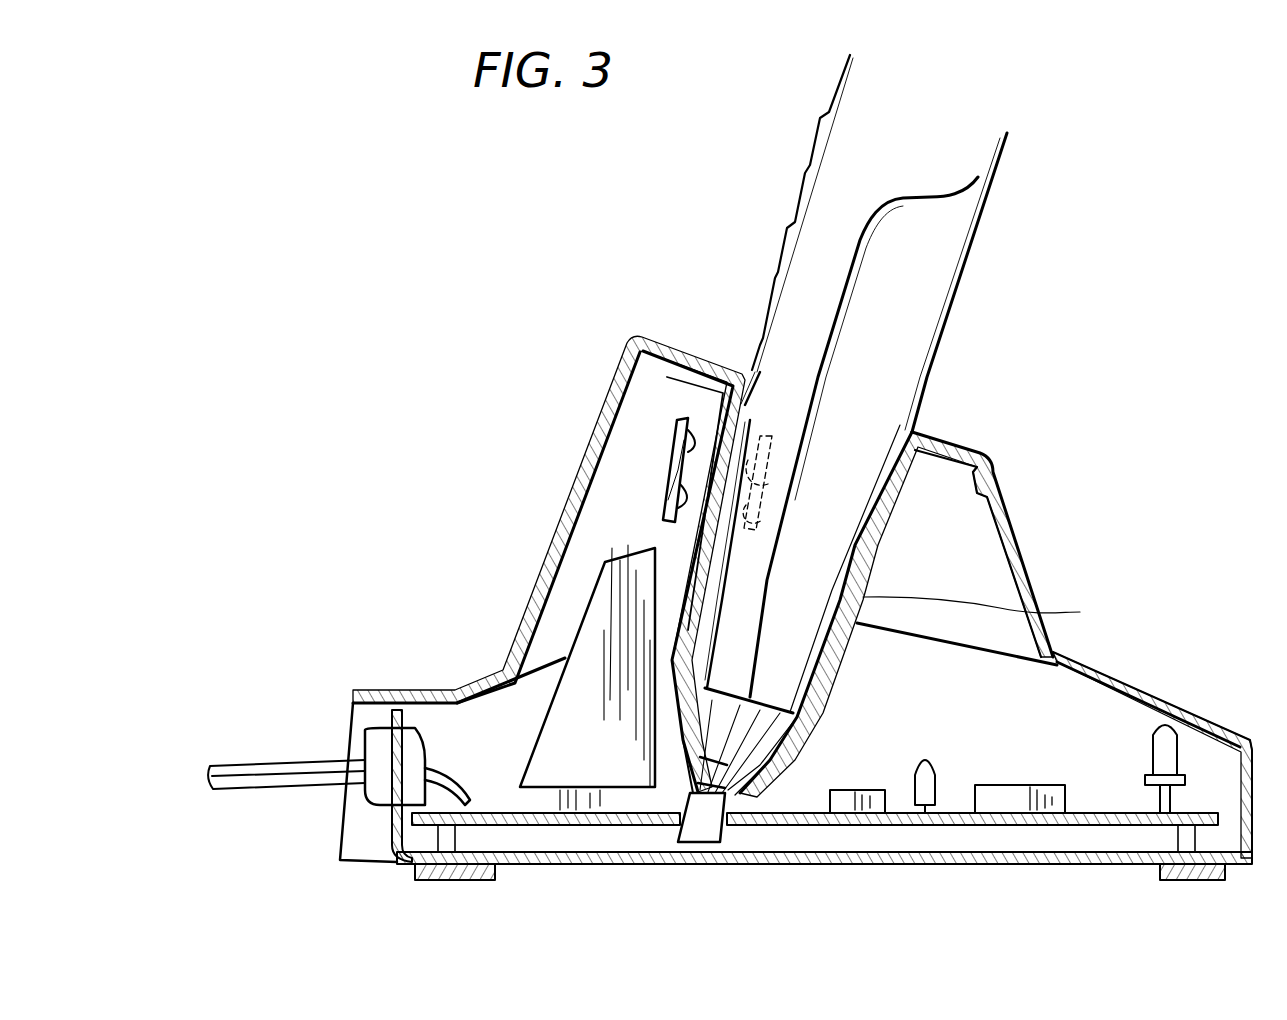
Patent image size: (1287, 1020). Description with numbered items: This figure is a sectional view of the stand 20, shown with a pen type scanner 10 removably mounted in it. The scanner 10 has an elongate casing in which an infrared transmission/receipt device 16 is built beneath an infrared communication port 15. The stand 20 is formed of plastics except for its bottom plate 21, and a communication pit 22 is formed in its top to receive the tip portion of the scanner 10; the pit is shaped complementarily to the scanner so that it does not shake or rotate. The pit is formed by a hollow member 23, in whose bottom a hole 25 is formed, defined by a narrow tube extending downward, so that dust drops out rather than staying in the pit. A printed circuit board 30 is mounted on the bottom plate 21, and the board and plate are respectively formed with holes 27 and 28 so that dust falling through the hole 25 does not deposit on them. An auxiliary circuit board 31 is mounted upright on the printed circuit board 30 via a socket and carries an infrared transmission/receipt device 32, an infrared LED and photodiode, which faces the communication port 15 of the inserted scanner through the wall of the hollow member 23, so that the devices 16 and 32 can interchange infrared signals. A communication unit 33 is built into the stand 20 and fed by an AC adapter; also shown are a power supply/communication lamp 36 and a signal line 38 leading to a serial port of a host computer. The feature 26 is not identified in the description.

The pen type scanner 10 is at (1003, 243).
The infrared communication port 15 is at (727, 543).
The infrared transmission/receipt device 16 is at (780, 468).
The stand 20 is at (796, 608).
The bottom plate 21 is at (556, 864).
The communication pit 22 is at (925, 432).
The hollow member 23 is at (990, 610).
The hole 25 is at (705, 832).
The nozzle outlet 26 is at (722, 848).
The hole 27 is at (740, 797).
The hole 28 is at (686, 845).
The printed circuit board 30 is at (950, 830).
The auxiliary circuit board 31 is at (600, 592).
The infrared transmission/receipt device 32 is at (680, 440).
The communication unit 33 is at (1040, 712).
The power supply/communication lamp 36 is at (1166, 726).
The signal line 38 is at (262, 774).